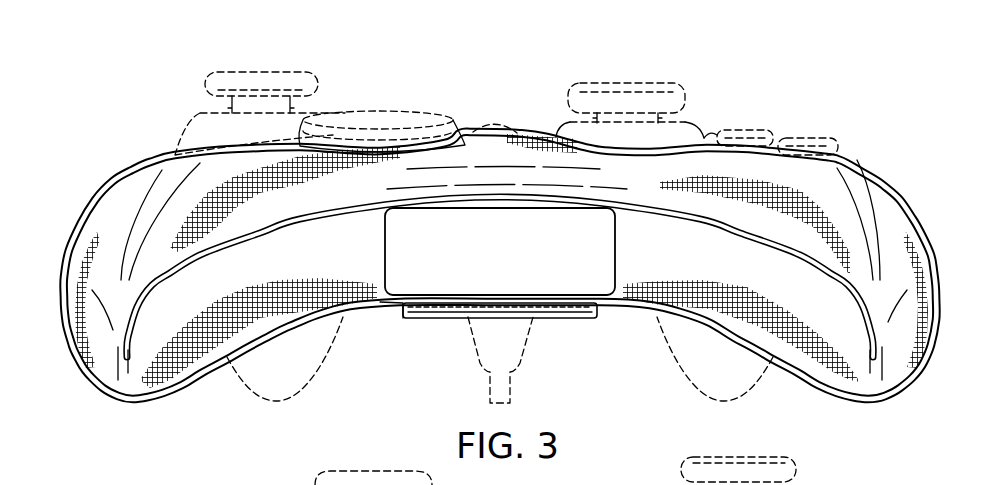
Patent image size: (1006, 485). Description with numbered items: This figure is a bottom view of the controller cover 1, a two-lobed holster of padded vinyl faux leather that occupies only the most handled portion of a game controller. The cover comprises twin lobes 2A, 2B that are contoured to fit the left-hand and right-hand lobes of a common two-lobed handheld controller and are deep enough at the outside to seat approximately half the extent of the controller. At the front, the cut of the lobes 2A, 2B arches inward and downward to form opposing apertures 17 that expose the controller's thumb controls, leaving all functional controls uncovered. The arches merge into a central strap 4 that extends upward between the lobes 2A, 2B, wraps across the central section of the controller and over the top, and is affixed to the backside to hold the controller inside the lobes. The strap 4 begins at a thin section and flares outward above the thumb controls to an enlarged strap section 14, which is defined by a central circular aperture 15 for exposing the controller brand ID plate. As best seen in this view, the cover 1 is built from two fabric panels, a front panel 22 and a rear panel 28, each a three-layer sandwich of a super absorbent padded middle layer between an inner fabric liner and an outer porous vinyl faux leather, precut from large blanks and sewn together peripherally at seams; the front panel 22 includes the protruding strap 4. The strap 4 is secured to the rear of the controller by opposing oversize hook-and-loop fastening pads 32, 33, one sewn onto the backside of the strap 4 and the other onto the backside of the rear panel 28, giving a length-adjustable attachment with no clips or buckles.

The controller cover 1 is at (101, 171).
The lobe 2A is at (65, 290).
The lobe 2B is at (936, 297).
The central strap 4 is at (567, 317).
The aperture 17 is at (457, 212).
The front panel 22 is at (508, 183).
The rear panel 28 is at (654, 253).
The hook-and-loop fastening pad 32 is at (393, 329).
The hook-and-loop fastening pad 33 is at (402, 305).
The enlarged strap section 14 is at (604, 484).
The central circular aperture 15 is at (420, 477).